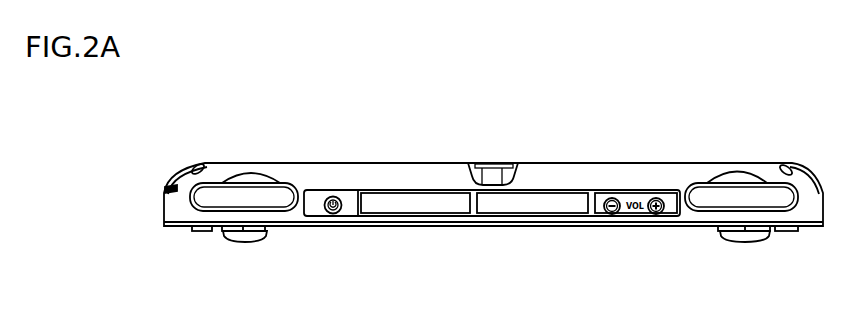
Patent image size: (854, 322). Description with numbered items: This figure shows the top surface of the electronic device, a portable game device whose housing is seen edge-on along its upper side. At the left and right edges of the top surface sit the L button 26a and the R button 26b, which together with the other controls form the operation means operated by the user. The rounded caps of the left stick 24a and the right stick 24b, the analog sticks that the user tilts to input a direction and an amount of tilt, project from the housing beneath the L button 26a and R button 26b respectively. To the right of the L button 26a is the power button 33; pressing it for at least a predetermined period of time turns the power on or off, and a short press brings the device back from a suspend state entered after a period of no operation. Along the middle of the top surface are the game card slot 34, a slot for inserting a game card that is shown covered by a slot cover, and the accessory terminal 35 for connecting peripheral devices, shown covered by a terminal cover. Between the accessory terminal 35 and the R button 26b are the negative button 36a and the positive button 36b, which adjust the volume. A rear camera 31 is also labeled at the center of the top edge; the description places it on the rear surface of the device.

The left stick 24a is at (246, 241).
The right stick 24b is at (742, 241).
The L button 26a is at (258, 196).
The R button 26b is at (752, 197).
The rear camera 31 is at (494, 178).
The power button 33 is at (334, 214).
The game card slot 34 is at (415, 207).
The accessory terminal 35 is at (534, 205).
The negative button 36a is at (612, 214).
The positive button 36b is at (658, 193).